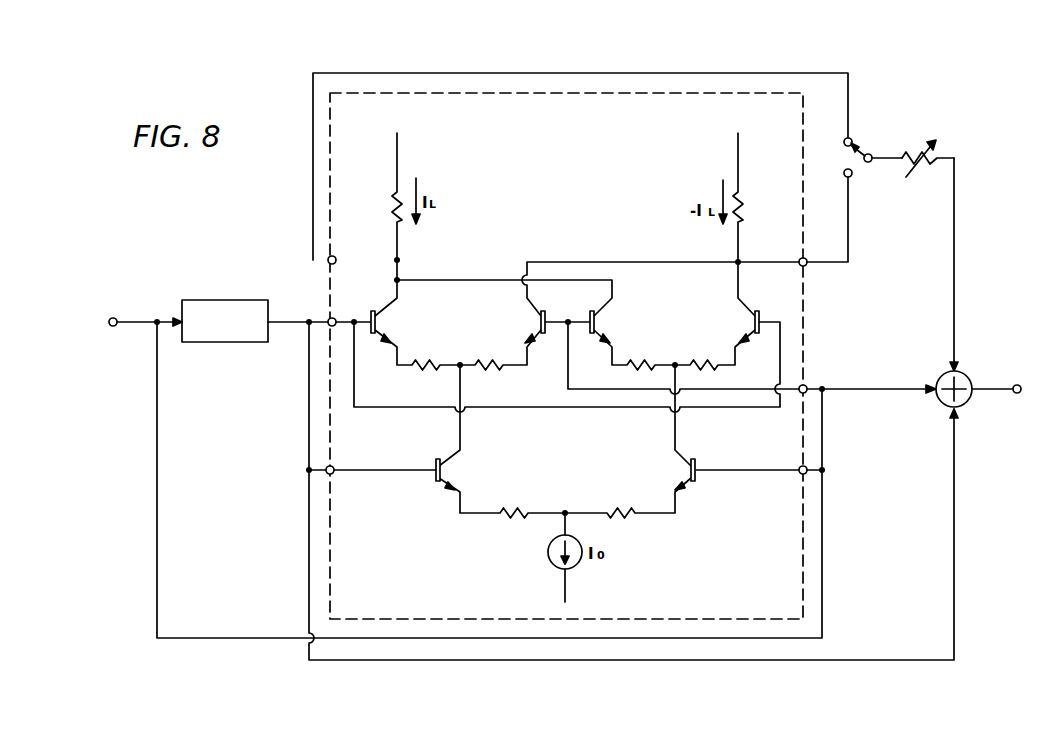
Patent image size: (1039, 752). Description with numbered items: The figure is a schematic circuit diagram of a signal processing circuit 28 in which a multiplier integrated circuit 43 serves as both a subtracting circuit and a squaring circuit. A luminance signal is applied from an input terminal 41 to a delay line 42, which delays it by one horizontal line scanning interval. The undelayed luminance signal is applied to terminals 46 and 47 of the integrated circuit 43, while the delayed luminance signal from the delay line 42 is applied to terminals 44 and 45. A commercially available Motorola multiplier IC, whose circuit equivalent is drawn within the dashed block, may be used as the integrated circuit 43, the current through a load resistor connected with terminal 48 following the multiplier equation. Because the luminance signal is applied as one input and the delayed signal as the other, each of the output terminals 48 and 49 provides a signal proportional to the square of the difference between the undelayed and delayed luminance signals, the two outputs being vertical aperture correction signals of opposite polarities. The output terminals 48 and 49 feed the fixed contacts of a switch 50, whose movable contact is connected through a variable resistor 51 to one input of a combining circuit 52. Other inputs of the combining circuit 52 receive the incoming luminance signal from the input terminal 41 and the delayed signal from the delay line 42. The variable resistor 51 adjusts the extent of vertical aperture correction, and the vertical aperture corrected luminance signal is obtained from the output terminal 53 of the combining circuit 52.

The signal processing circuit 28 is at (762, 0).
The input terminal 41 is at (115, 318).
The delay line 42 is at (225, 300).
The integrated circuit 43 is at (588, 90).
The input terminal of IC 44 is at (332, 474).
The input terminal of IC 45 is at (329, 319).
The input terminal of IC 46 is at (799, 475).
The input terminal of IC 47 is at (806, 385).
The output terminal of IC 48 is at (328, 261).
The output terminal of IC 49 is at (806, 265).
The switch 50 is at (858, 153).
The variable resistor 51 is at (932, 148).
The combining circuit 52 is at (962, 375).
The output terminal 53 is at (1012, 395).